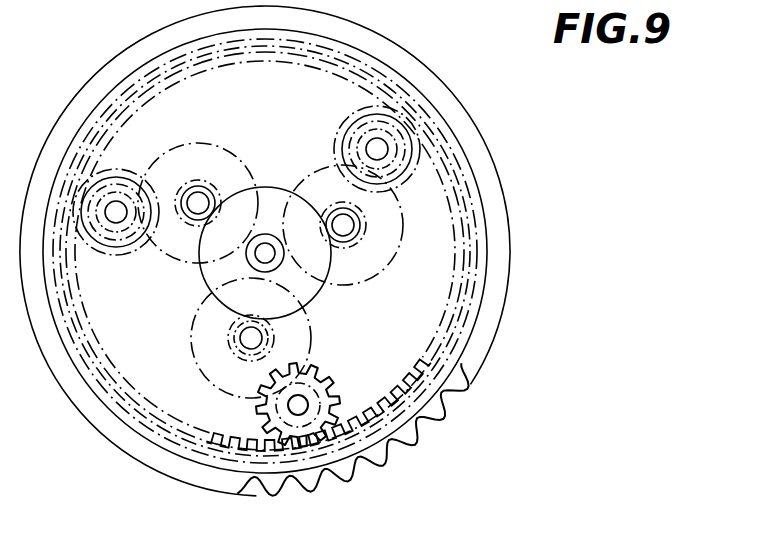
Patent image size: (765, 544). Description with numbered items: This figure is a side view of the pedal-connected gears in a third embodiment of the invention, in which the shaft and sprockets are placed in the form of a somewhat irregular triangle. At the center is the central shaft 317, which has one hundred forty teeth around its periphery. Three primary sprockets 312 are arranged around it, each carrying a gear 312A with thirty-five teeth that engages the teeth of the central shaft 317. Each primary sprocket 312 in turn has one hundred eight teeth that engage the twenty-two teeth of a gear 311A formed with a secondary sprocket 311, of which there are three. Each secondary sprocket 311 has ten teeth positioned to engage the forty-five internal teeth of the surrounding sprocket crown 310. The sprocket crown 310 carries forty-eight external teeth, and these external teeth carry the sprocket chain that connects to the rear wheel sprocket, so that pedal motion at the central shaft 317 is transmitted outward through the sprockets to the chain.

The sprocket crown 310 is at (275, 485).
The secondary sprocket 311 is at (327, 400).
The gear 311A is at (327, 422).
The primary sprocket 312 is at (390, 218).
The gear 312A is at (355, 236).
The central shaft 317 is at (212, 275).